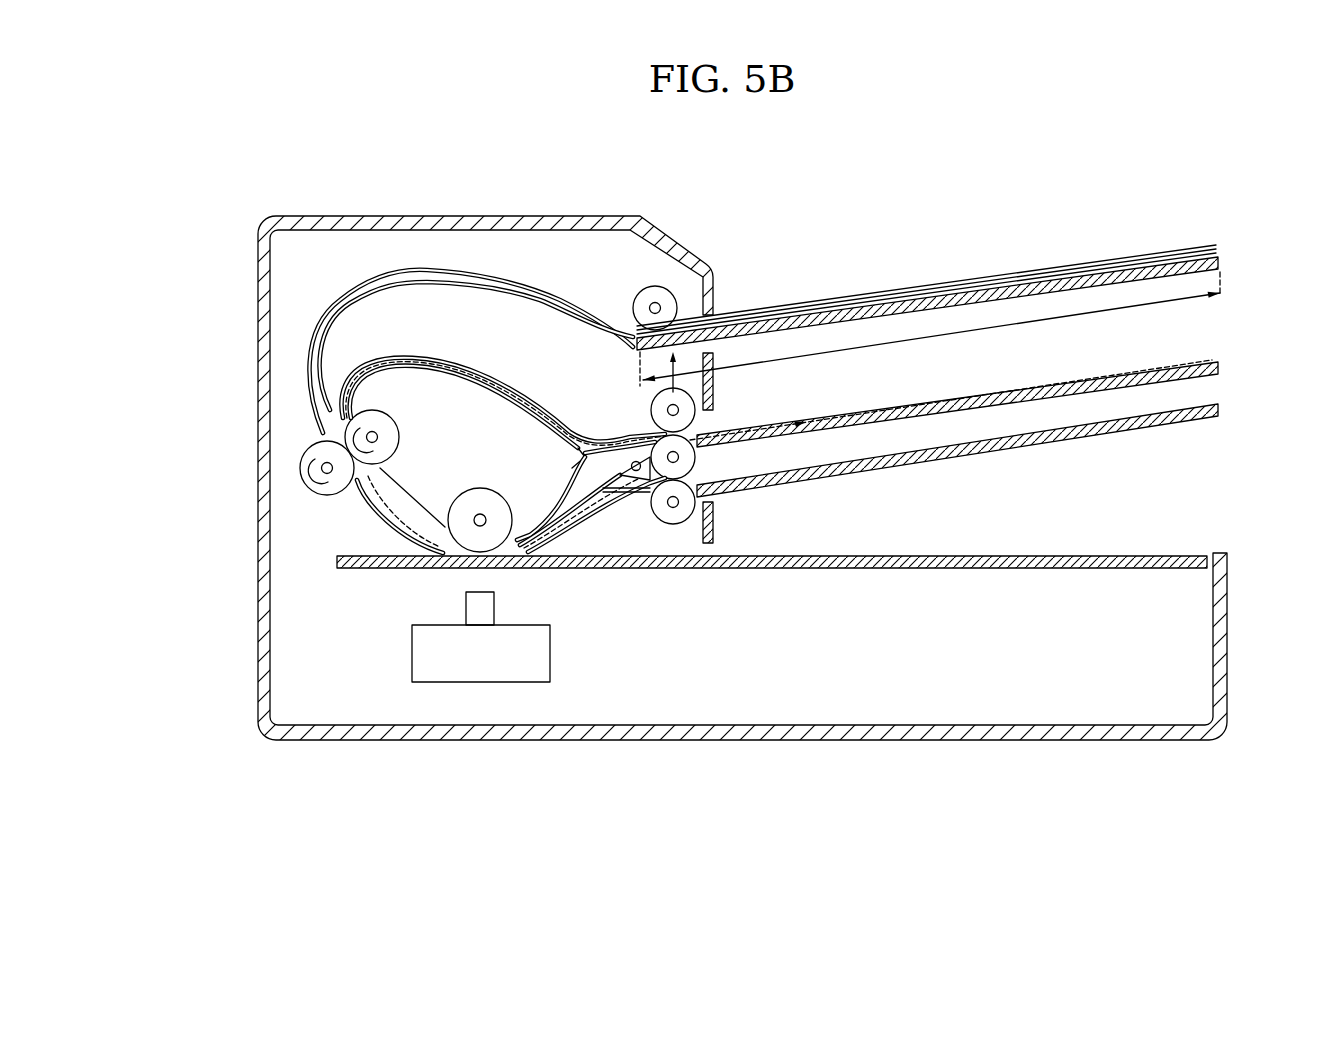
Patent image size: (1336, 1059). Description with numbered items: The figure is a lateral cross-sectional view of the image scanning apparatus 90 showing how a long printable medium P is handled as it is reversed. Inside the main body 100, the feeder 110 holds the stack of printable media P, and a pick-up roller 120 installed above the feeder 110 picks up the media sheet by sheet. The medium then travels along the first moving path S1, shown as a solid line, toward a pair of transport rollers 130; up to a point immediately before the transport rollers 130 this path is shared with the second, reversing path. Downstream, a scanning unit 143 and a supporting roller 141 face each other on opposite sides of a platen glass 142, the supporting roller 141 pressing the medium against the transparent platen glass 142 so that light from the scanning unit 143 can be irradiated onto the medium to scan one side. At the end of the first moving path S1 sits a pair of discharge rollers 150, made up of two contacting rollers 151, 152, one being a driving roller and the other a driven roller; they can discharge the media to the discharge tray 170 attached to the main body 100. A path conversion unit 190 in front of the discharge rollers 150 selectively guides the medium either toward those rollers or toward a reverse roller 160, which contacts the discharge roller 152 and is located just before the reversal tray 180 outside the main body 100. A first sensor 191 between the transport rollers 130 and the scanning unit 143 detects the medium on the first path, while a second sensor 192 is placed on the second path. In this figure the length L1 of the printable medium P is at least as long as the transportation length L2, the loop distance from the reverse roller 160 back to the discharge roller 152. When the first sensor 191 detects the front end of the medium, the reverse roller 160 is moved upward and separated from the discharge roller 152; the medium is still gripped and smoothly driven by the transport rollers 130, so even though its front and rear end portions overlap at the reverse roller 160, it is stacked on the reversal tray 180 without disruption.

The image forming apparatus 90 is at (590, 750).
The main body 100 is at (262, 352).
The feeder 110 is at (1224, 264).
The pick-up roller 120 is at (660, 298).
The pair of transport rollers 130 is at (304, 460).
The supporting roller 141 is at (481, 488).
The platen glass 142 is at (762, 570).
The scanning unit 143 is at (551, 655).
The pair of discharge rollers 150 is at (752, 493).
The roller 151 is at (693, 514).
The discharge roller 152 is at (692, 468).
The reverse roller 160 is at (656, 398).
The discharge tray 170 is at (1222, 411).
The reversal tray 180 is at (1222, 362).
The path conversion unit 190 is at (622, 474).
The first sensor 191 is at (357, 503).
The second sensor 192 is at (402, 352).
The printable medium P is at (459, 373).
The first moving path S1 is at (554, 300).
The length of the printable medium L1 is at (930, 332).
The transportation length L2 is at (600, 440).